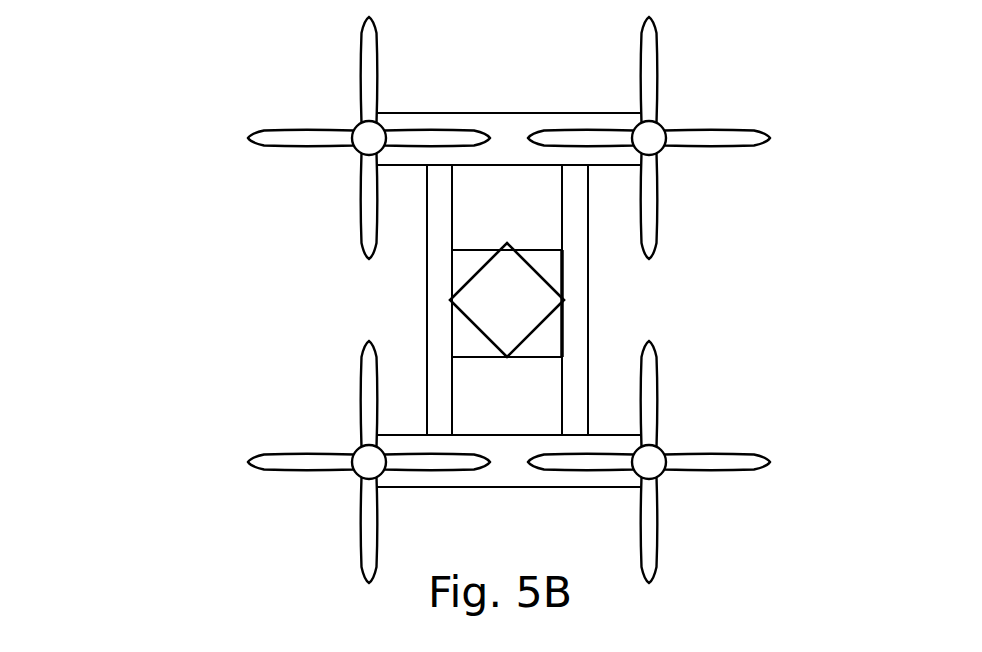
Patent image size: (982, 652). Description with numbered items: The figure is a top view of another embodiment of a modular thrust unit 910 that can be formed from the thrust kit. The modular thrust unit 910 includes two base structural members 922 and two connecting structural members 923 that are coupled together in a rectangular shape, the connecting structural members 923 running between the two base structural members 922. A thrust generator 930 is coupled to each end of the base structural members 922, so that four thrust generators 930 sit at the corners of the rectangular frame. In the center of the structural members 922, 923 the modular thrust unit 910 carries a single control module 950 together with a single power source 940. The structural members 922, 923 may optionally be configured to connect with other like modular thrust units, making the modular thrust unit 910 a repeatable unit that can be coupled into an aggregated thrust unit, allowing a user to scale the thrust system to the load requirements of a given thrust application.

The modular thrust unit 910 is at (138, 63).
The base structural member 922 is at (500, 119).
The connecting structural member 923 is at (432, 300).
The thrust generator 930 is at (322, 78).
The power source 940 is at (548, 335).
The control module 950 is at (517, 260).